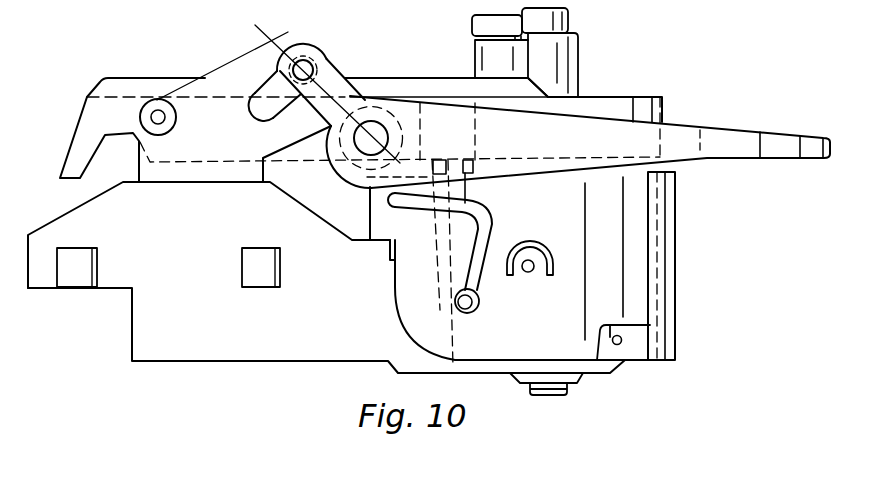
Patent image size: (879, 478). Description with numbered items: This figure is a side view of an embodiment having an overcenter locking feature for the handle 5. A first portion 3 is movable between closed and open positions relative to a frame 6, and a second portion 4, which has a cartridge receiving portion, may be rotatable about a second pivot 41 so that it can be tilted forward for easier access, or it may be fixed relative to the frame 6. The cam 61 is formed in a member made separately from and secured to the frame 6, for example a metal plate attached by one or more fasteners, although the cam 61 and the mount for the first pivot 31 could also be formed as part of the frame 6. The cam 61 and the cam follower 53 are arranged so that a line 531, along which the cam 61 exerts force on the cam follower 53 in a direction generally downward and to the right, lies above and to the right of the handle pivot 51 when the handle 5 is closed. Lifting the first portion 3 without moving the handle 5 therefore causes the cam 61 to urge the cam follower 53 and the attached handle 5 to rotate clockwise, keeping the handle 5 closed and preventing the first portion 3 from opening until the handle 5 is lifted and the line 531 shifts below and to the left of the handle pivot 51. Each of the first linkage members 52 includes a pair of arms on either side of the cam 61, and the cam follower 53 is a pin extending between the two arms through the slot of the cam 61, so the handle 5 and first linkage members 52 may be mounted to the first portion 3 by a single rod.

The first portion 3 is at (100, 100).
The first pivot 31 is at (157, 112).
The second portion 4 is at (668, 268).
The second pivot 41 is at (620, 344).
The handle 5 is at (739, 136).
The handle pivot 51 is at (374, 131).
The first linkage members 52 is at (348, 80).
The cam follower 53 is at (313, 63).
The line 531 is at (270, 87).
The frame 6 is at (217, 352).
The cam 61 is at (268, 87).